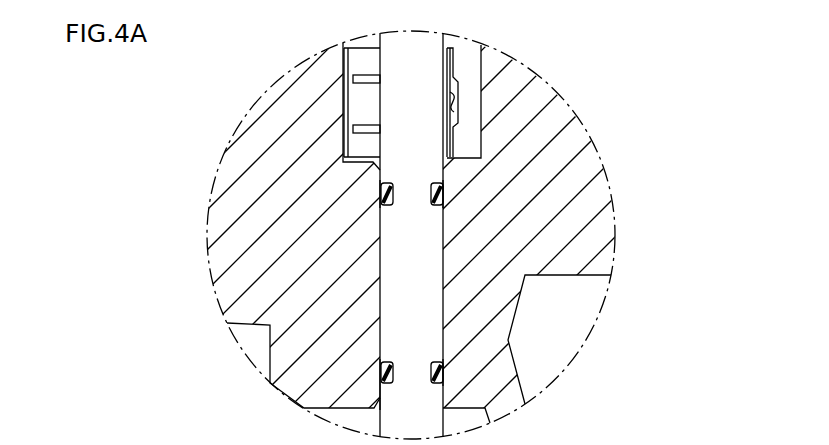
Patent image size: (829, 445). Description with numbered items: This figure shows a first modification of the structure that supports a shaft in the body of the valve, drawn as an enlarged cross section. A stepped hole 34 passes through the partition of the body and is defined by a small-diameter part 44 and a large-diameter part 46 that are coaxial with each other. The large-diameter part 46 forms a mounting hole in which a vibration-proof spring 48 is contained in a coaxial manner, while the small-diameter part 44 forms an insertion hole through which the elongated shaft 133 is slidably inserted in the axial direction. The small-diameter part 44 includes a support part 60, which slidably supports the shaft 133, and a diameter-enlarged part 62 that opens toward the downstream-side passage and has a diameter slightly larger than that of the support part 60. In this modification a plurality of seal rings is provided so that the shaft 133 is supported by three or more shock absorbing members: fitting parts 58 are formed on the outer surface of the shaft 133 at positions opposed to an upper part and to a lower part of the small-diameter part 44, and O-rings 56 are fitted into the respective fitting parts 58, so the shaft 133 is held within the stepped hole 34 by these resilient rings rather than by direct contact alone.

The stepped hole 34 is at (414, 222).
The small-diameter part 44 is at (382, 229).
The large-diameter part 46 is at (344, 86).
The vibration-proof spring 48 is at (464, 94).
The O-ring 56 is at (442, 201).
The fitting part 58 is at (442, 196).
The support part 60 is at (382, 323).
The diameter-enlarged part 62 is at (382, 391).
The shaft 133 is at (445, 268).